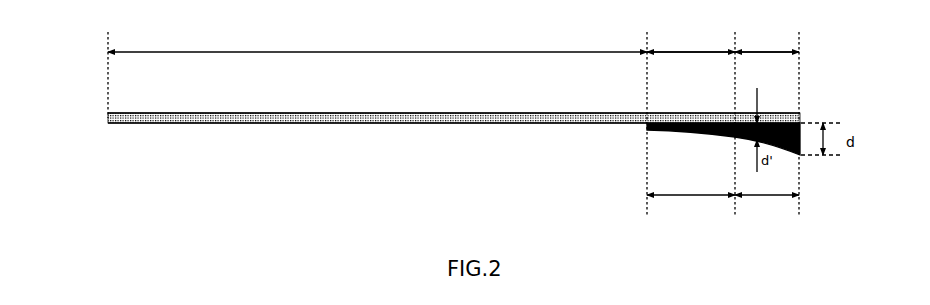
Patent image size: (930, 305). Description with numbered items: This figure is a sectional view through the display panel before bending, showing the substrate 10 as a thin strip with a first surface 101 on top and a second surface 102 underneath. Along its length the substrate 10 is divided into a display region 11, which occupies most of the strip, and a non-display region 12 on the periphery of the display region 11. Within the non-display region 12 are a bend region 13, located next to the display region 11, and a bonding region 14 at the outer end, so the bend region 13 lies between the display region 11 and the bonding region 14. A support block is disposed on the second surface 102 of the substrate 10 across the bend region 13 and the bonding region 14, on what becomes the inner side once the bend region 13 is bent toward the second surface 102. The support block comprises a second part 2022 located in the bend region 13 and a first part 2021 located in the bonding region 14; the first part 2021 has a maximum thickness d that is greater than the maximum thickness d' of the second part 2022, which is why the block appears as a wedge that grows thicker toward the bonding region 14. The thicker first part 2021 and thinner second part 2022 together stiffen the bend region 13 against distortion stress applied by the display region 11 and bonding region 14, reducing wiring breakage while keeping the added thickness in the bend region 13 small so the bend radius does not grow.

The substrate 10 is at (108, 117).
The display region 11 is at (377, 123).
The non-display region 12 is at (723, 115).
The bend region 13 is at (691, 67).
The bonding region 14 is at (767, 65).
The first surface 101 is at (435, 113).
The second surface 102 is at (392, 124).
The second part 2022 is at (691, 173).
The first part 2021 is at (767, 173).